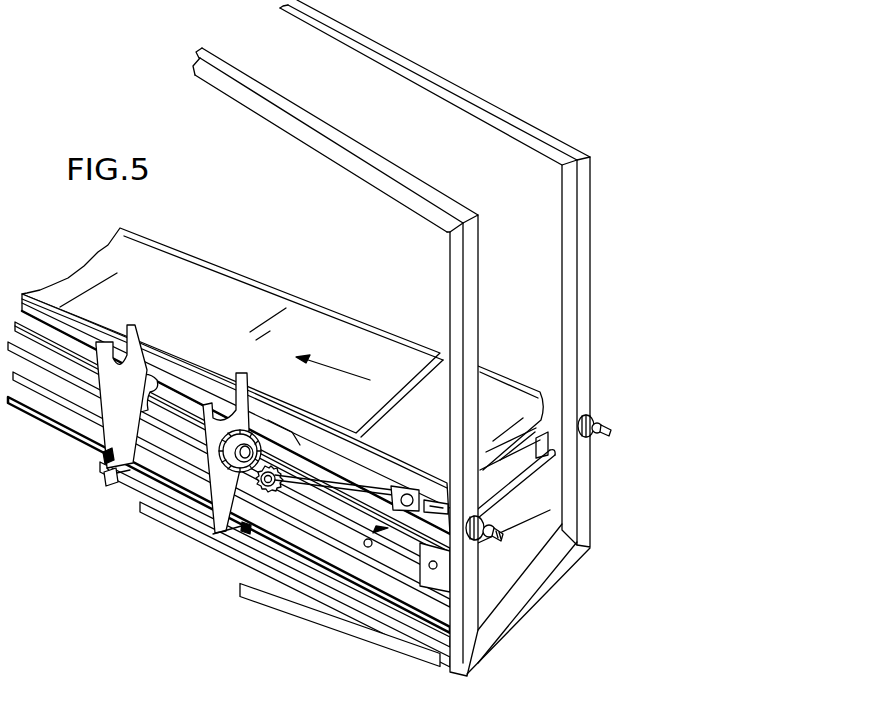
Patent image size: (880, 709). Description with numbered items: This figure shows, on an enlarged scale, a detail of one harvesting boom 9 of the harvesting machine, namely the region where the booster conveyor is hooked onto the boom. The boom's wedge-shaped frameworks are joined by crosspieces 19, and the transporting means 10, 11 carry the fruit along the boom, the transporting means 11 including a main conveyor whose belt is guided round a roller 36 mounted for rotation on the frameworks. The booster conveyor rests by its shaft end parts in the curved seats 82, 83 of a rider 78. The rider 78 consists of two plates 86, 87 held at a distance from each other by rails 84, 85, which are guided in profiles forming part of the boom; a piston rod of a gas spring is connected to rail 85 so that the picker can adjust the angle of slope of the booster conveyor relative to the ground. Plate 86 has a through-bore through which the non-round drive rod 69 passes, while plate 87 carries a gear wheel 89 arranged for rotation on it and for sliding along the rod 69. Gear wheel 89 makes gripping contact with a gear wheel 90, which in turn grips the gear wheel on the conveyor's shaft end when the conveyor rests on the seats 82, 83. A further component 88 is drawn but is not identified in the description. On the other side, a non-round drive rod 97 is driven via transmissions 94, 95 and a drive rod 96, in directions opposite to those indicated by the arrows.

The harvesting boom 9 is at (478, 93).
The transporting means 10 is at (214, 533).
The transporting means 11 is at (263, 302).
The crosspieces 19 is at (534, 589).
The roller 36 is at (417, 510).
The drive rod 69 is at (60, 370).
The rider 78 is at (110, 476).
The curved seat 82 is at (121, 328).
The curved seat 83 is at (238, 387).
The rail 84 is at (281, 437).
The rail 85 is at (182, 486).
The plate 86 is at (110, 455).
The plate 87 is at (229, 531).
The cam 88 is at (144, 406).
The gear wheel 89 is at (244, 529).
The gear wheel 90 is at (231, 463).
The transmission 94 is at (442, 588).
The transmission 95 is at (557, 470).
The drive rod 96 is at (503, 497).
The non-round drive rod 97 is at (548, 440).